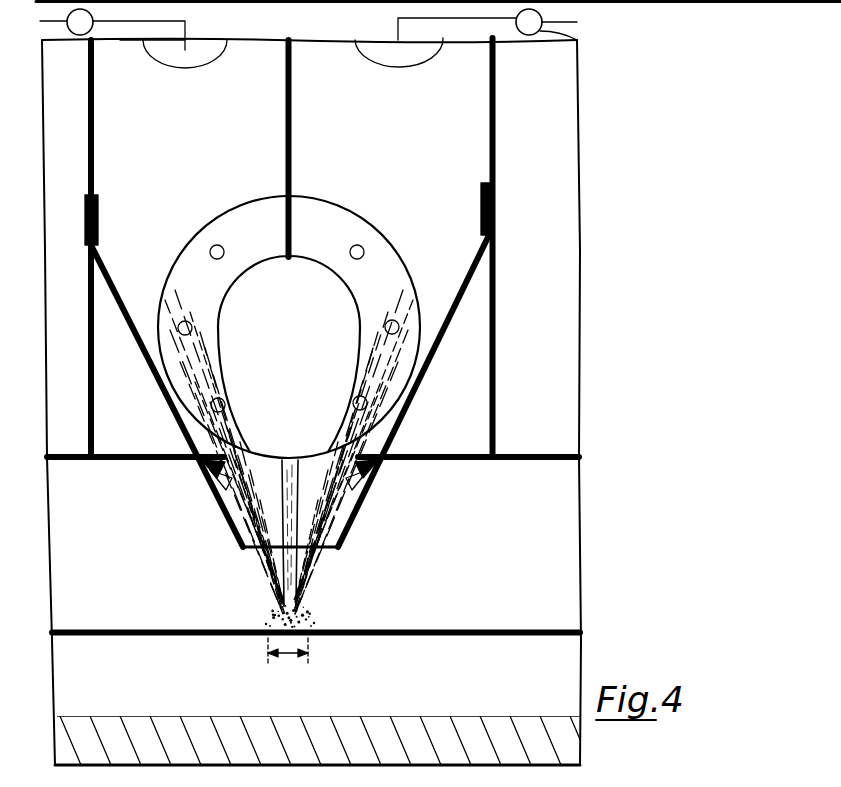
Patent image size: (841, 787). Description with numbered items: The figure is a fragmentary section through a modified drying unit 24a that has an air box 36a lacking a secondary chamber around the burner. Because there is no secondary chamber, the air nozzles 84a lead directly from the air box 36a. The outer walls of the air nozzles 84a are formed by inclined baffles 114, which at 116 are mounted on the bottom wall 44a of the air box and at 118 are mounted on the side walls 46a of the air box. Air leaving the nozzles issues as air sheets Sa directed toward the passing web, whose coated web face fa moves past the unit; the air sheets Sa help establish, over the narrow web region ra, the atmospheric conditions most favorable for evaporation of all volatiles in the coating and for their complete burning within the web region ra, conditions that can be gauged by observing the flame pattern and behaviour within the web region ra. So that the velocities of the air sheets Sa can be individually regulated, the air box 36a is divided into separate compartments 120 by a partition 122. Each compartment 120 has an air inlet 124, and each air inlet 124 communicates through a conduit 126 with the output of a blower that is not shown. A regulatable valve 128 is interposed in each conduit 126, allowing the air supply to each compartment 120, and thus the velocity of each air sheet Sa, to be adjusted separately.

The modified drying unit 24a is at (505, 232).
The air box 36a is at (565, 92).
The bottom wall 44a is at (118, 463).
The side walls 46a is at (88, 143).
The air nozzles 84a is at (195, 461).
The inclined baffles 114 is at (205, 421).
The baffle mounting on bottom wall 116 is at (207, 482).
The baffle mounting on side walls 118 is at (98, 212).
The compartments 120 is at (200, 152).
The partition 122 is at (293, 138).
The air inlet 124 is at (200, 54).
The conduit 126 is at (124, 43).
The regulatable valve 128 is at (75, 35).
The air sheets Sa is at (267, 560).
The web face fa is at (380, 628).
The web region ra is at (275, 660).